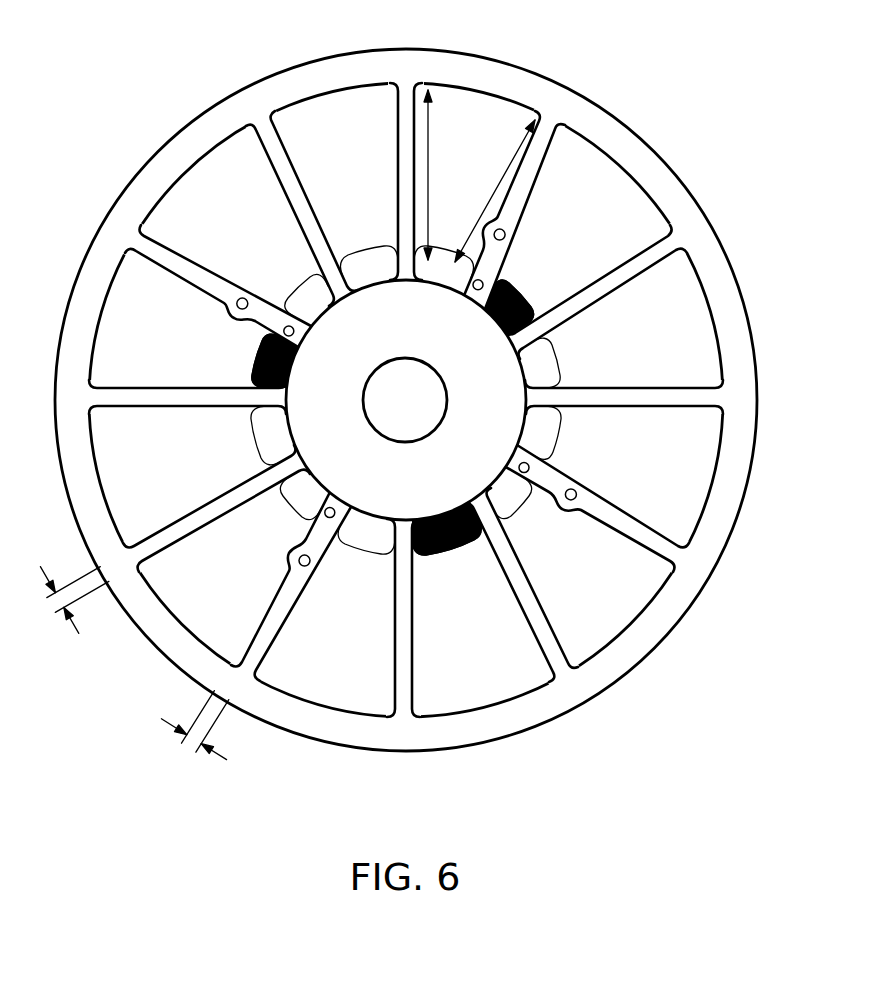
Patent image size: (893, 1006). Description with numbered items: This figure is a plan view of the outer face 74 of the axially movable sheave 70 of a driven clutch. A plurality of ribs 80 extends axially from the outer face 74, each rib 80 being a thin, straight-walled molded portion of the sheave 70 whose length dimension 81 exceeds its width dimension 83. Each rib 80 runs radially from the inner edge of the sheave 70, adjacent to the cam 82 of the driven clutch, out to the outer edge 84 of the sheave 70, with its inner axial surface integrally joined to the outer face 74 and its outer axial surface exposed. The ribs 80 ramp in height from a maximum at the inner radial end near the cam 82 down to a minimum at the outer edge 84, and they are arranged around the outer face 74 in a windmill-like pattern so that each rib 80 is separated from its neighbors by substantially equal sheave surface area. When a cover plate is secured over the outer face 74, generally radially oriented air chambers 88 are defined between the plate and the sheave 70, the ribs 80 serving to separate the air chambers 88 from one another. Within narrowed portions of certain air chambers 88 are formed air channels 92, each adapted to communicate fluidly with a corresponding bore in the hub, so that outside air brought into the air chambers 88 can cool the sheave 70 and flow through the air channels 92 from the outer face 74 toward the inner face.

The axially movable sheave 70 is at (379, 397).
The outer face 74 is at (110, 208).
The ribs 80 is at (392, 682).
The length dimension 81 is at (532, 146).
The cam 82 is at (374, 283).
The width dimension 83 is at (50, 602).
The outer edge 84 is at (78, 484).
The air chambers 88 is at (672, 502).
The air channel 92 is at (514, 283).